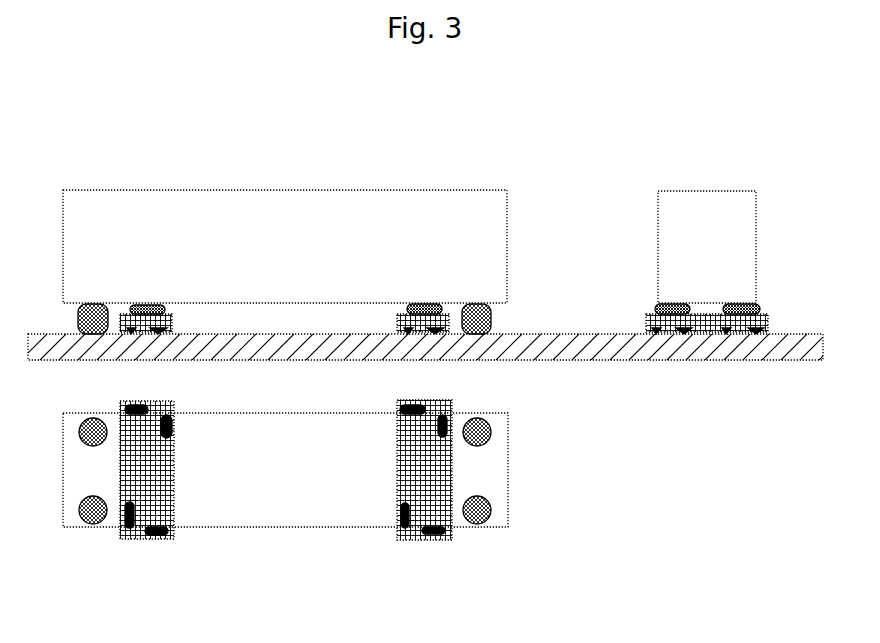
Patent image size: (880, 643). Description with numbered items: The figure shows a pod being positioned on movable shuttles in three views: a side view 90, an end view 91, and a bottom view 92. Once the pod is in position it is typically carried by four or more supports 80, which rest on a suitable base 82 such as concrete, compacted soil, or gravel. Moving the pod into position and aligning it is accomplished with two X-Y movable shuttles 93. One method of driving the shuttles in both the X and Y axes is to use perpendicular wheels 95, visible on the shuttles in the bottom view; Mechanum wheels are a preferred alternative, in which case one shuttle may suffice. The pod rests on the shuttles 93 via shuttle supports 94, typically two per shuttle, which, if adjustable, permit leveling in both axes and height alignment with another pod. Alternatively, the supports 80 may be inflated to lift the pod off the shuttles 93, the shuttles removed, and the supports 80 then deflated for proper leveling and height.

The supports 80 is at (490, 428).
The base 82 is at (597, 343).
The side view 90 is at (298, 221).
The end view 91 is at (722, 220).
The bottom view 92 is at (301, 444).
The X-Y movable shuttles 93 is at (399, 313).
The shuttle supports 94 is at (428, 303).
The perpendicular wheels 95 is at (172, 412).